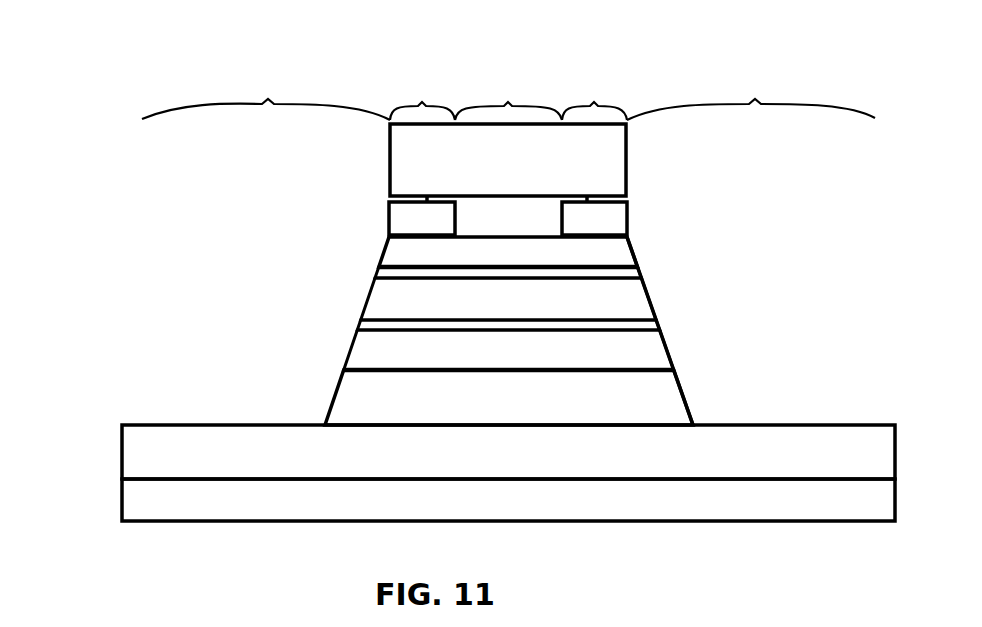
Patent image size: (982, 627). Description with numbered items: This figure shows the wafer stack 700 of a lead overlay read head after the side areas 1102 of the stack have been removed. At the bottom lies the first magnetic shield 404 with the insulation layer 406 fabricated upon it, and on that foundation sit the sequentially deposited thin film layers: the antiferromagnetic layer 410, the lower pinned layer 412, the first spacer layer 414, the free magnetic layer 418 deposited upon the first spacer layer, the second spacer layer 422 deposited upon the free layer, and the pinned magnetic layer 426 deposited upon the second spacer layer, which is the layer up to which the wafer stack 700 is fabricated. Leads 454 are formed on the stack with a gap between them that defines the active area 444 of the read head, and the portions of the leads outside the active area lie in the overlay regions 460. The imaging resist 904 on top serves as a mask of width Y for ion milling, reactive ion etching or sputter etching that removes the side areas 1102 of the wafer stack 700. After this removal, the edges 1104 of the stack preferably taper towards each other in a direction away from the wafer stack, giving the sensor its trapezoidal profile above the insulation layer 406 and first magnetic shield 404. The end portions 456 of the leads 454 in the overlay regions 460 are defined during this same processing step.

The wafer stack 700 is at (166, 84).
The side areas 1102 is at (508, 94).
The overlay regions 460 is at (508, 94).
The active area 444 is at (508, 94).
The imaging resist 904 is at (390, 160).
The leads 454 is at (388, 220).
The end portions 456 is at (628, 220).
The pinned magnetic layer 426 is at (385, 248).
The second spacer layer 422 is at (389, 238).
The free magnetic layer 418 is at (368, 297).
The first spacer layer 414 is at (358, 325).
The lower pinned layer 412 is at (349, 353).
The antiferromagnetic layer 410 is at (333, 402).
The edges 1104 is at (649, 300).
The insulation layer 406 is at (121, 447).
The first magnetic shield 404 is at (121, 498).